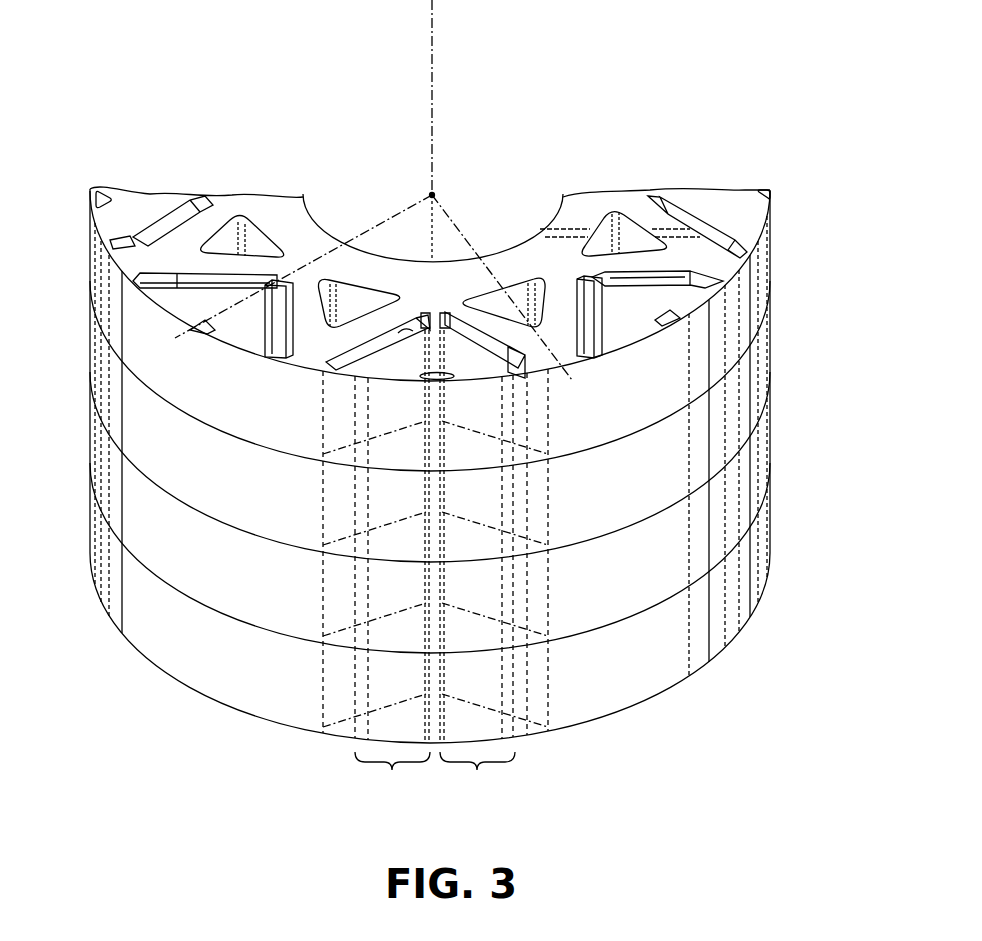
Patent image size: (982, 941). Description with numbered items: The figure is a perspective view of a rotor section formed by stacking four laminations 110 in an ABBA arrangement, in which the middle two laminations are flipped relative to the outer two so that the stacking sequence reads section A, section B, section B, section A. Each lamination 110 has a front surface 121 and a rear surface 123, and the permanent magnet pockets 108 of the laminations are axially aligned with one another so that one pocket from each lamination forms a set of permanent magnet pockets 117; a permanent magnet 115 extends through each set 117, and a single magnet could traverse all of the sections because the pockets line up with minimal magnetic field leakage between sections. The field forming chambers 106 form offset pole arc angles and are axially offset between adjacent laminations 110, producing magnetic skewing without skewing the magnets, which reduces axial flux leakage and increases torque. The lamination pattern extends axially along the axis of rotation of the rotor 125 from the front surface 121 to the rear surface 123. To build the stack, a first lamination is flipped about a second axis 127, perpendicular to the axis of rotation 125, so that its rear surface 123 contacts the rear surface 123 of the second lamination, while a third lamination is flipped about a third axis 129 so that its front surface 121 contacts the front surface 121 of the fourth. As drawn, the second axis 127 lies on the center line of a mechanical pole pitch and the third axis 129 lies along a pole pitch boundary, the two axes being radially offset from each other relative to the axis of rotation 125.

The field forming chamber 106 is at (323, 416).
The permanent magnet pocket 108 is at (462, 326).
The lamination 110 is at (770, 237).
The permanent magnet 115 is at (392, 334).
The set of permanent magnet pockets 117 is at (392, 770).
The front surface 121 is at (146, 205).
The rear surface 123 is at (155, 390).
The axis of rotation of the rotor 125 is at (434, 96).
The second axis 127 is at (308, 258).
The third axis 129 is at (515, 285).
The section A is at (90, 250).
The section B is at (90, 345).